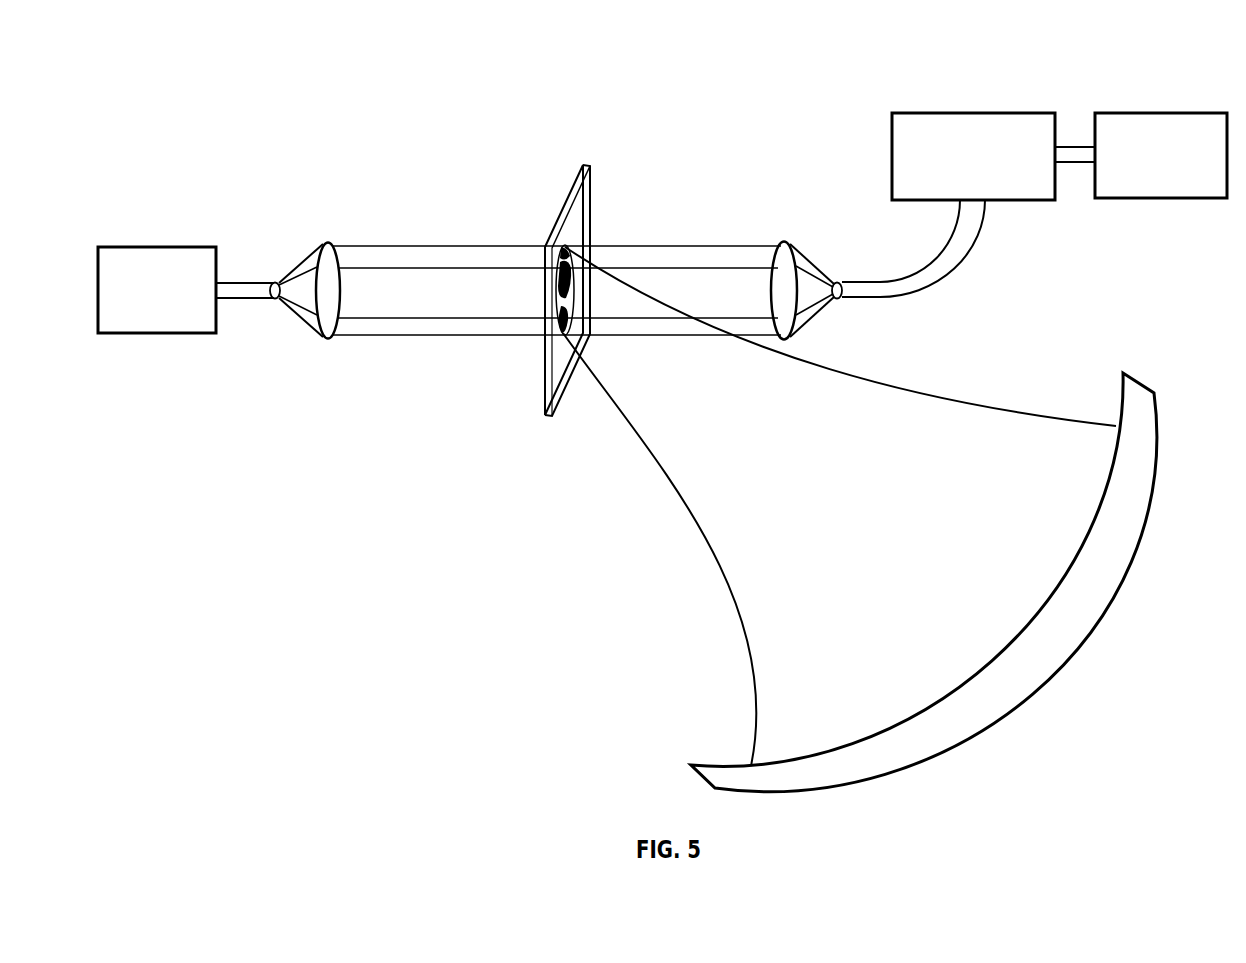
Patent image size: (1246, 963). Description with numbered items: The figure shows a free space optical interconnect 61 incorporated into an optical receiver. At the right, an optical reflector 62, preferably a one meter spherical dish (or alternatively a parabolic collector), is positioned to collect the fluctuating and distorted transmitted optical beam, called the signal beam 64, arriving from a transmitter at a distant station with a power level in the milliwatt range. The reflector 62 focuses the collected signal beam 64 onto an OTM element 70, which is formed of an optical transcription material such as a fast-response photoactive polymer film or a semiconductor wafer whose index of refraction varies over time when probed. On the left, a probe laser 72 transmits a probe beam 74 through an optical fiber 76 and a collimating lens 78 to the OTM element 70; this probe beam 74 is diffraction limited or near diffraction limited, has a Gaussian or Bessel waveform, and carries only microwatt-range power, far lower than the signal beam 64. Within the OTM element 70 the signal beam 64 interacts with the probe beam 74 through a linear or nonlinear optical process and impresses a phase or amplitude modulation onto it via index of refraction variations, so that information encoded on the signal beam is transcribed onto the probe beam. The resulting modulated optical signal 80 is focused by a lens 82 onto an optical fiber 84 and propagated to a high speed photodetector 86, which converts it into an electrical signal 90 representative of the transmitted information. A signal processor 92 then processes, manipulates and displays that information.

The free space optical interconnect 61 is at (743, 39).
The optical reflector 62 is at (1148, 484).
The signal beam 64 is at (839, 506).
The OTM element 70 is at (547, 380).
The probe laser 72 is at (180, 246).
The probe beam 74 is at (425, 290).
The optical fiber 76 is at (251, 281).
The collimating lens 78 is at (323, 243).
The modulated optical signal 80 is at (667, 298).
The lens 82 is at (783, 240).
The optical fiber 84 is at (880, 279).
The high speed photodetector 86 is at (930, 110).
The electrical signal 90 is at (1070, 165).
The signal processor 92 is at (1135, 110).